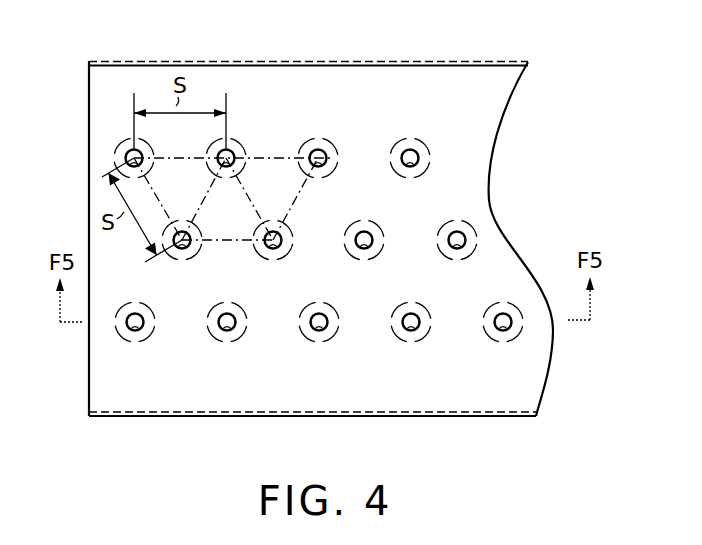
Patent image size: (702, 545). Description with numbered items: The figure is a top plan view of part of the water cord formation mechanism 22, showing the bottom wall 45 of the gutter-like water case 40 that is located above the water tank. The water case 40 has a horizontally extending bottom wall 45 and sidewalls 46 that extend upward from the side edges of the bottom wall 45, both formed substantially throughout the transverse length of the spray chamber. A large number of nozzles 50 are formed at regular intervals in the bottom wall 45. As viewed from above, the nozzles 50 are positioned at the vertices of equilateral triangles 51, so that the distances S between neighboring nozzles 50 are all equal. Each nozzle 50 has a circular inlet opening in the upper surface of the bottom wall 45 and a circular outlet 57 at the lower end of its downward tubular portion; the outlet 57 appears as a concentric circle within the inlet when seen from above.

The water cord formation mechanism 22 is at (575, 80).
The water case 40 is at (480, 143).
The bottom wall 45 is at (291, 412).
The sidewalls 46 is at (410, 61).
The nozzles 50 is at (310, 214).
The equilateral triangles 51 is at (232, 175).
The outlet 57 is at (320, 252).